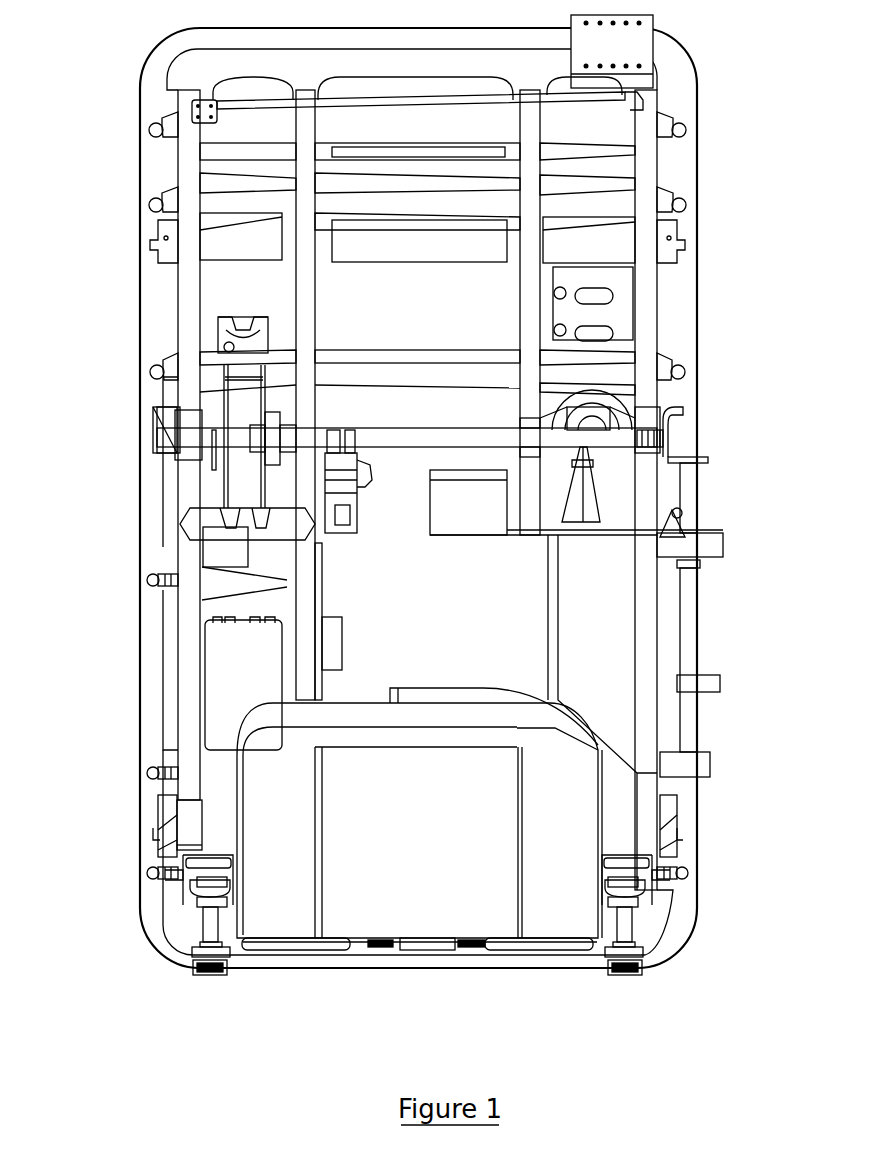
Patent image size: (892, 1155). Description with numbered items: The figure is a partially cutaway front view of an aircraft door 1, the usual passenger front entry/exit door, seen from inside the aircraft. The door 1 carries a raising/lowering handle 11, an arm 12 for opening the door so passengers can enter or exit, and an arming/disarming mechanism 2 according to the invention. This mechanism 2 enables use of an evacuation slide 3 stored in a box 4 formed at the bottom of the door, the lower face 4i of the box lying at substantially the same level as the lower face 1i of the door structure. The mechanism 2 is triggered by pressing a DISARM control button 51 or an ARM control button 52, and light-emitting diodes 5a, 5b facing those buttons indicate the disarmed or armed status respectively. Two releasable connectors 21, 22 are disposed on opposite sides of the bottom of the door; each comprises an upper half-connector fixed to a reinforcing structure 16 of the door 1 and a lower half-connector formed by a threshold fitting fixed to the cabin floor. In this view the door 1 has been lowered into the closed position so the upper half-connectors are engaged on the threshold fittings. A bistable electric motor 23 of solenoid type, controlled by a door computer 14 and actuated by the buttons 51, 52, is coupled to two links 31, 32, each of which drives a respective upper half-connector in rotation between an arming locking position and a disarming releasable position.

The aircraft door 1 is at (100, 768).
The lower face of the door structure 1i is at (257, 967).
The arming/disarming mechanism 2 is at (378, 953).
The evacuation slide 3 is at (552, 835).
The box 4 is at (600, 845).
The lower face of the box 4i is at (433, 972).
The light-emitting diode 5a is at (566, 287).
The light-emitting diode 5b is at (567, 333).
The DISARM control button 51 is at (596, 287).
The ARM control button 52 is at (612, 327).
The raising/lowering handle 11 is at (590, 461).
The arm 12 is at (592, 593).
The door computer 14 is at (230, 640).
The reinforcing structure 16 is at (310, 652).
The releasable connector 21 is at (202, 920).
The releasable connector 22 is at (637, 918).
The bistable electric motor 23 is at (420, 950).
The link 31 is at (295, 941).
The link 32 is at (530, 942).